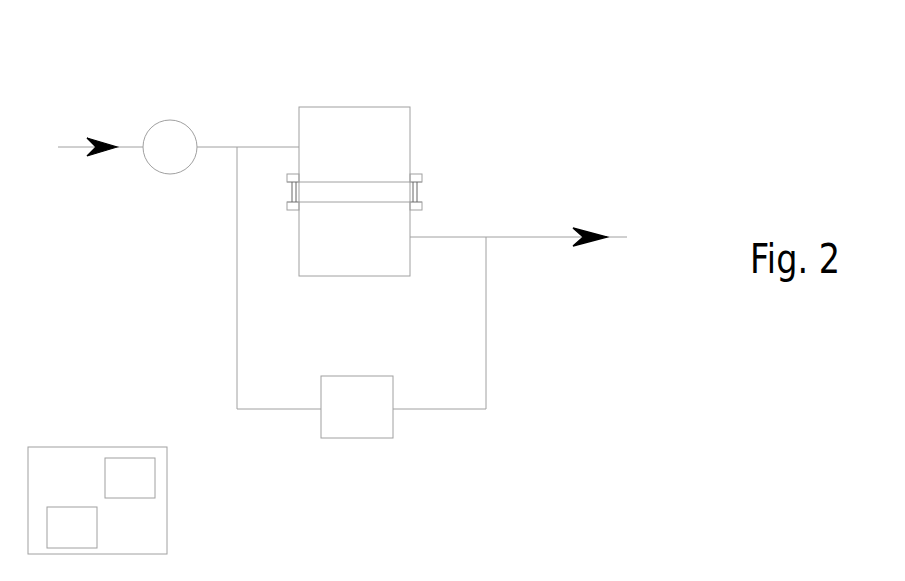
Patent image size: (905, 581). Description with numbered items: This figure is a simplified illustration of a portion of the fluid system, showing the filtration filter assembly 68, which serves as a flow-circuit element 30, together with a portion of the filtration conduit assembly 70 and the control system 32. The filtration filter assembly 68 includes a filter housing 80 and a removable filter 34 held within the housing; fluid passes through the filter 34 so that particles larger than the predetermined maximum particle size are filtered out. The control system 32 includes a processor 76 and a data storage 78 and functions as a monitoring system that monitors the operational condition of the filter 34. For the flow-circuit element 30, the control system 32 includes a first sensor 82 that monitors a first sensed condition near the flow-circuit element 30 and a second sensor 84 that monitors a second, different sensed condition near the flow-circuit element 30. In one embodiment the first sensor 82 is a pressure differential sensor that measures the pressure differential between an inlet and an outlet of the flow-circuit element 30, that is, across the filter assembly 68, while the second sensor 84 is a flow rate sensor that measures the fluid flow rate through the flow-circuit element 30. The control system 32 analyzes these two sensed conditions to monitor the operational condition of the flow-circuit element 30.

The flow-circuit element 30 is at (374, 148).
The control system 32 is at (97, 455).
The removable filter 34 is at (398, 183).
The filtration filter assembly 68 is at (299, 107).
The filtration conduit assembly 70 is at (553, 237).
The processor 76 is at (60, 539).
The data storage 78 is at (118, 489).
The filter housing 80 is at (393, 107).
The first sensor 82 is at (348, 420).
The second sensor 84 is at (170, 120).